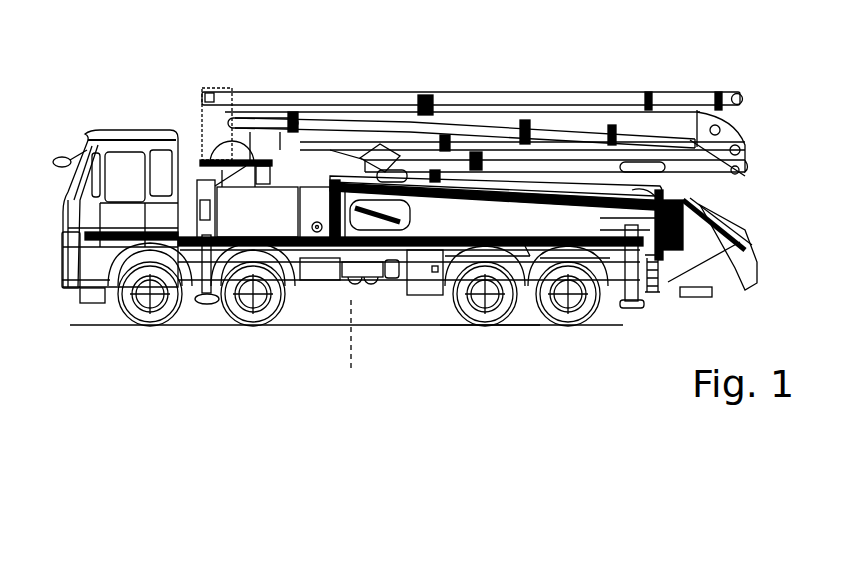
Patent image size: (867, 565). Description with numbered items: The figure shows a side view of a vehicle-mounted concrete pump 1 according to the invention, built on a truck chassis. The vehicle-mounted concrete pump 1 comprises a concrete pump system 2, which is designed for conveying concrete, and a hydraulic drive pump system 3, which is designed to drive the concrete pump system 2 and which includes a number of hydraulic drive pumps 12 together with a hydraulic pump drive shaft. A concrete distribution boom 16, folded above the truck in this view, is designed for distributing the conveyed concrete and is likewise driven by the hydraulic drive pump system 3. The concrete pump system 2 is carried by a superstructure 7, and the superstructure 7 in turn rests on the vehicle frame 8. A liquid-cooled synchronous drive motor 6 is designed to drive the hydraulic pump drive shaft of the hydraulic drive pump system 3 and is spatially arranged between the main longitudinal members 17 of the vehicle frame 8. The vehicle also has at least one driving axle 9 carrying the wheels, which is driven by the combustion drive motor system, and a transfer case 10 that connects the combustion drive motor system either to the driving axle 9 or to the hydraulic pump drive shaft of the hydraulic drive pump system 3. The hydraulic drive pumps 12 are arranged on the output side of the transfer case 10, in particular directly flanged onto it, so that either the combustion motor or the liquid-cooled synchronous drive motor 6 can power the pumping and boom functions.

The vehicle-mounted concrete pump 1 is at (96, 72).
The concrete pump system 2 is at (603, 257).
The hydraulic drive pump system 3 is at (385, 200).
The liquid-cooled synchronous drive motor 6 is at (304, 288).
The superstructure 7 is at (458, 246).
The vehicle frame 8 is at (527, 246).
The driving axle 9 is at (480, 307).
The transfer case 10 is at (342, 263).
The hydraulic drive pumps 12 is at (377, 268).
The concrete distribution boom 16 is at (484, 107).
The main longitudinal members 17 is at (503, 327).